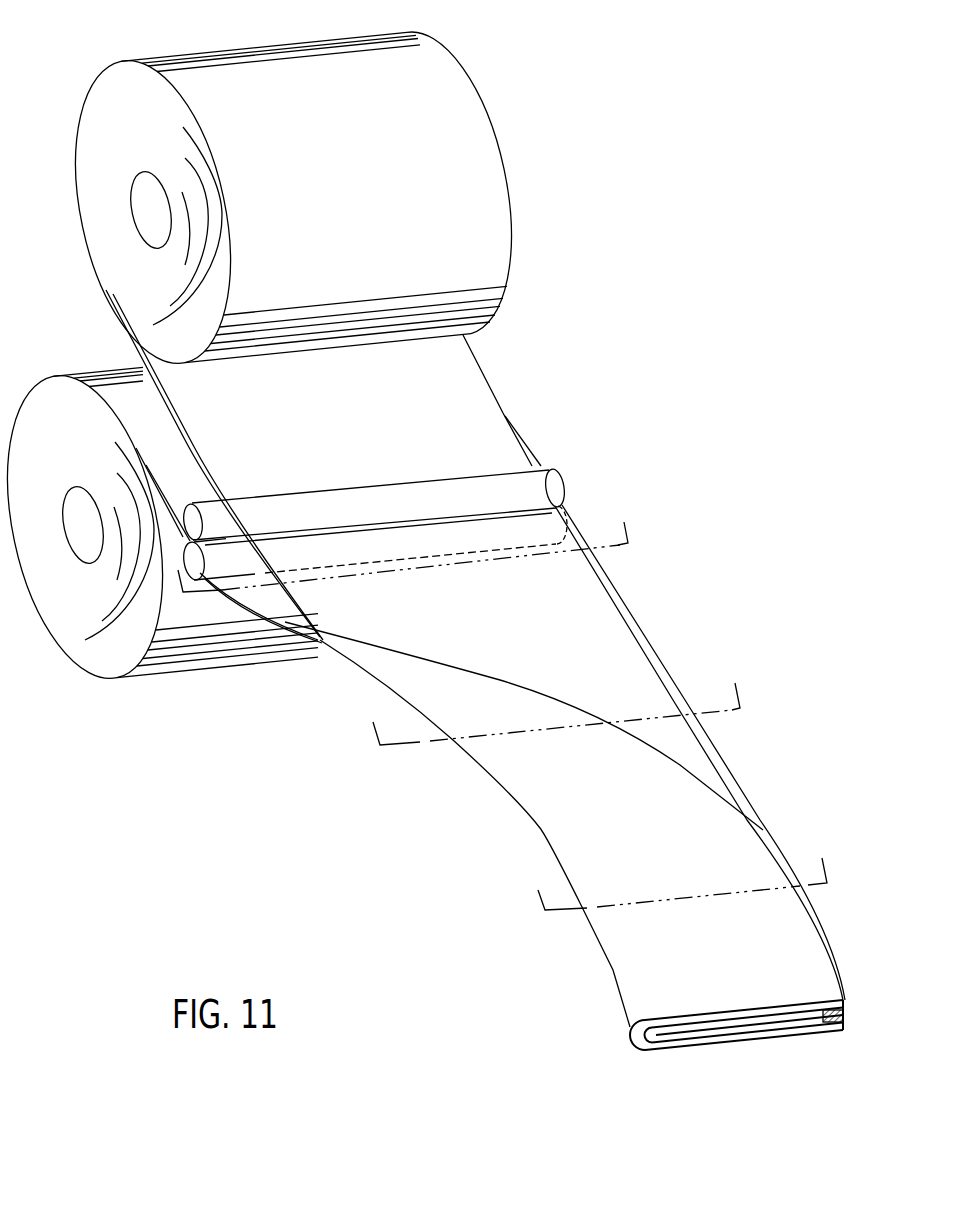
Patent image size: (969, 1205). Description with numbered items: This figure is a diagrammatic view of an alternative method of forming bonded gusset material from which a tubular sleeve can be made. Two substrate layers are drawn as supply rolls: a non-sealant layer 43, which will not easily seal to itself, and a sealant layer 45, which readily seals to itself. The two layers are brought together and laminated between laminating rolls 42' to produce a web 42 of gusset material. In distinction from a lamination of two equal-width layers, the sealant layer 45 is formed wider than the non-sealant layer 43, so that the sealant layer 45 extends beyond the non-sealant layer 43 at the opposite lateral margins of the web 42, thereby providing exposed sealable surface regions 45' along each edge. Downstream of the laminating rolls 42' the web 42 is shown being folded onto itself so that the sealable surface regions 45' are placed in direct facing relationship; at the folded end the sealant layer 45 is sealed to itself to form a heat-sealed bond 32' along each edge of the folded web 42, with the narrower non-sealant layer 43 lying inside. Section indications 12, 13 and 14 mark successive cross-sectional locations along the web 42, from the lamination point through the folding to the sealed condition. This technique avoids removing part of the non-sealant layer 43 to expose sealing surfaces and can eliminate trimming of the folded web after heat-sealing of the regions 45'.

The non-sealant layer 43 is at (467, 109).
The sealant layer 45 is at (398, 722).
The web 42 is at (475, 833).
The laminating rolls 42' is at (407, 515).
The sealable surface regions 45' is at (540, 752).
The heat-sealed bond 32' is at (857, 1039).
The section line 12- 12 is at (394, 541).
The section line 13- 13 is at (548, 698).
The section line 14- 14 is at (674, 868).